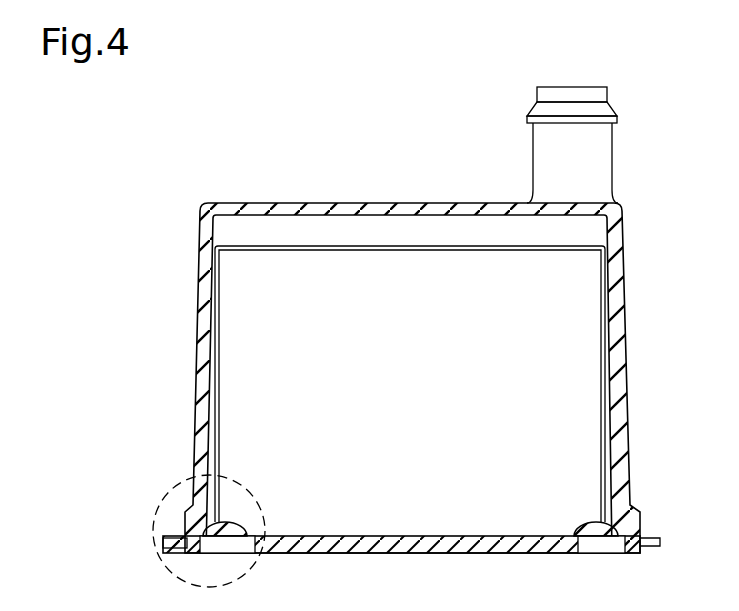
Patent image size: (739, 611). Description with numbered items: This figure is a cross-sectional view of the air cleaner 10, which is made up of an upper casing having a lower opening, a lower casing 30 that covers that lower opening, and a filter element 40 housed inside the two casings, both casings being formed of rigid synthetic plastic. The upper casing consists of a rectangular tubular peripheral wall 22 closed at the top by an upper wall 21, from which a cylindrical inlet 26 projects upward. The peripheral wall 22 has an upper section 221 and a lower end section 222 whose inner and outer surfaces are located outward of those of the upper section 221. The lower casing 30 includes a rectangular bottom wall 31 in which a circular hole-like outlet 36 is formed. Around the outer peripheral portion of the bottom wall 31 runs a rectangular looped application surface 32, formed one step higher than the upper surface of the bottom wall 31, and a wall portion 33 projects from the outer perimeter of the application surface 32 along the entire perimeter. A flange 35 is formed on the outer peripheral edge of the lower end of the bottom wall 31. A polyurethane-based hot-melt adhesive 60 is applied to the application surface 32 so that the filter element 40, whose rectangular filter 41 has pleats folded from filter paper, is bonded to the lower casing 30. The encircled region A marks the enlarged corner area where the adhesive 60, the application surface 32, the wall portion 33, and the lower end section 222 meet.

The air cleaner 10 is at (125, 148).
The upper wall 21 is at (314, 203).
The peripheral wall 22 is at (628, 290).
The inlet 26 is at (614, 159).
The lower casing 30 is at (536, 557).
The bottom wall 31 is at (500, 555).
The application surface 32 is at (248, 528).
The wall portion 33 is at (168, 541).
The flange 35 is at (183, 558).
The outlet 36 is at (248, 555).
The filter element 40 is at (609, 370).
The filter 41 is at (224, 383).
The adhesive 60 is at (235, 522).
The upper section 221 is at (197, 316).
The lower end section 222 is at (188, 522).
The enlarged region A is at (162, 554).